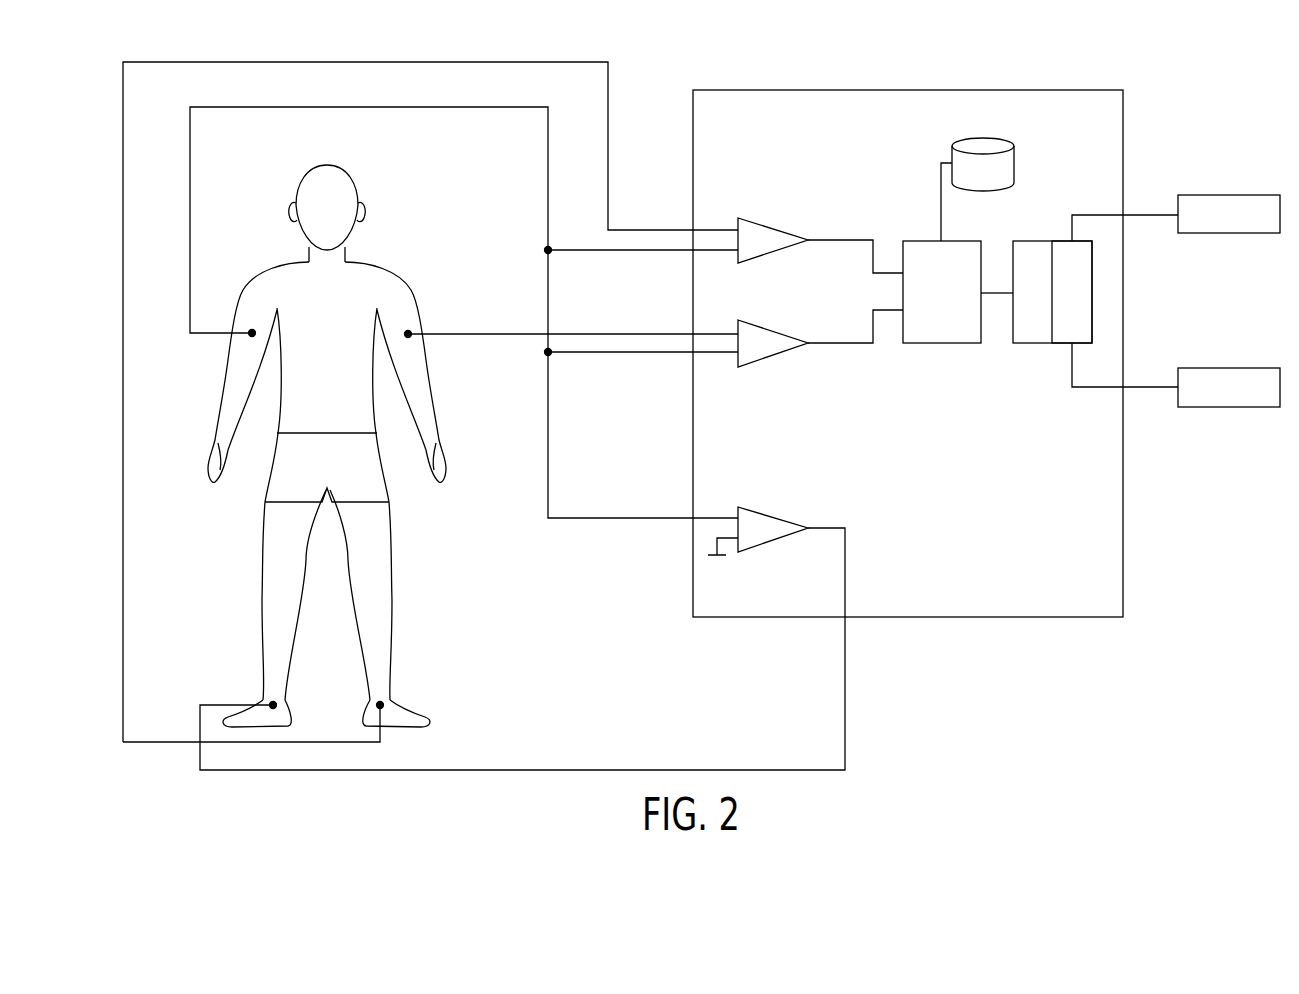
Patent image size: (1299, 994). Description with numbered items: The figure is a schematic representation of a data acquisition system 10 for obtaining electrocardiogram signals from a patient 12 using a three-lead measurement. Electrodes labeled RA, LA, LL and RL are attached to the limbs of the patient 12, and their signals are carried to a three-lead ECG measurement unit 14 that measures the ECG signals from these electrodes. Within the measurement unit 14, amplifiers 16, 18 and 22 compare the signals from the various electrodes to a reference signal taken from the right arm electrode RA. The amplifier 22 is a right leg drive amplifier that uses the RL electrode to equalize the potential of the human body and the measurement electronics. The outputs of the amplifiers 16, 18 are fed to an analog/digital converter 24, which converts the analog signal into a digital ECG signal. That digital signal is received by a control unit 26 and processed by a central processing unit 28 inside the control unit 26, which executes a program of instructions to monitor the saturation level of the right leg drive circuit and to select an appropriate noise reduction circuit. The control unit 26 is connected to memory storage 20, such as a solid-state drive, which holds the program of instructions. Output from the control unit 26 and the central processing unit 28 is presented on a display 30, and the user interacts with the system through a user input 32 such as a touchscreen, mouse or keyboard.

The data acquisition system 10 is at (986, 328).
The patient 12 is at (414, 218).
The 3-lead ECG measurement unit 14 is at (934, 328).
The amplifier 16 is at (776, 228).
The amplifier 18 is at (775, 356).
The memory storage 20 is at (1016, 165).
The right leg drive amplifier 22 is at (777, 517).
The analog/digital converter 24 is at (941, 344).
The control unit 26 is at (1030, 344).
The central processing unit 28 is at (1092, 293).
The display 30 is at (1232, 195).
The user input 32 is at (1232, 368).